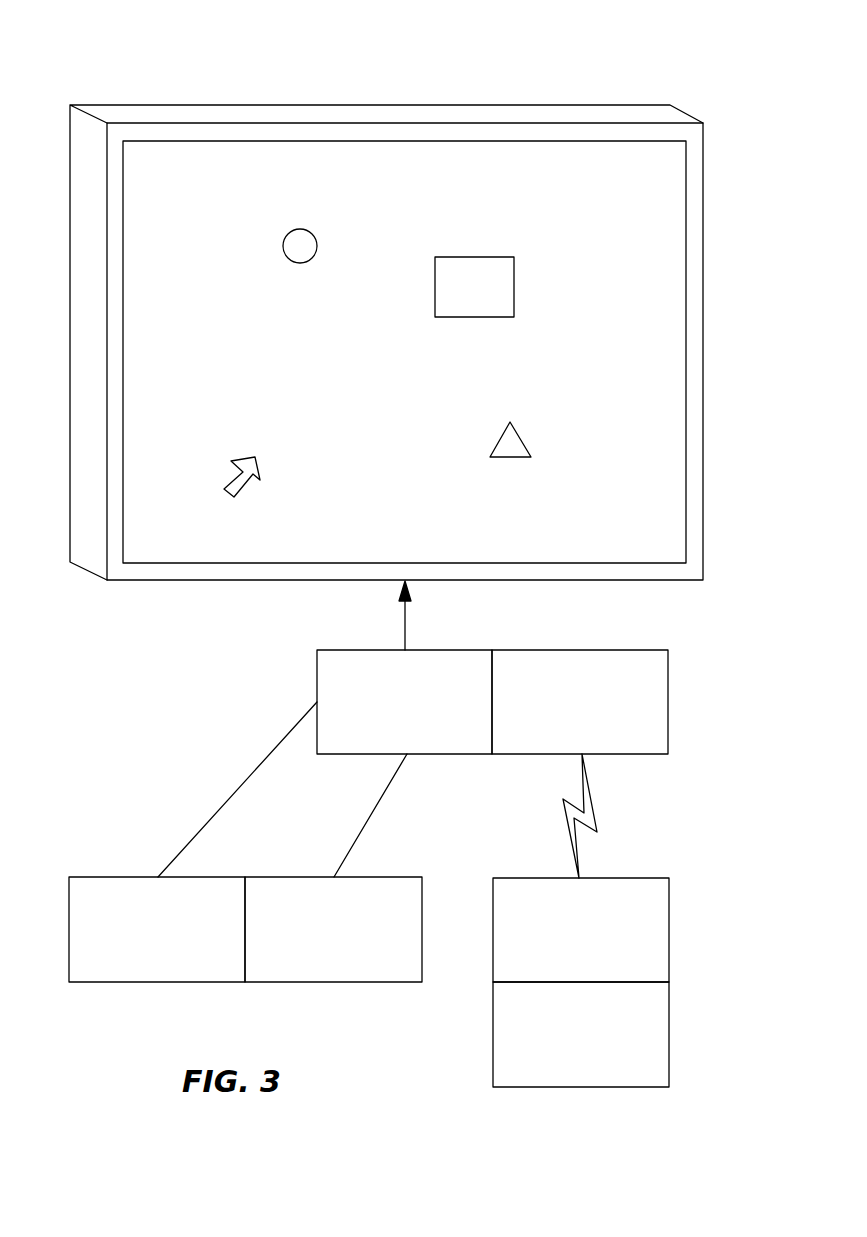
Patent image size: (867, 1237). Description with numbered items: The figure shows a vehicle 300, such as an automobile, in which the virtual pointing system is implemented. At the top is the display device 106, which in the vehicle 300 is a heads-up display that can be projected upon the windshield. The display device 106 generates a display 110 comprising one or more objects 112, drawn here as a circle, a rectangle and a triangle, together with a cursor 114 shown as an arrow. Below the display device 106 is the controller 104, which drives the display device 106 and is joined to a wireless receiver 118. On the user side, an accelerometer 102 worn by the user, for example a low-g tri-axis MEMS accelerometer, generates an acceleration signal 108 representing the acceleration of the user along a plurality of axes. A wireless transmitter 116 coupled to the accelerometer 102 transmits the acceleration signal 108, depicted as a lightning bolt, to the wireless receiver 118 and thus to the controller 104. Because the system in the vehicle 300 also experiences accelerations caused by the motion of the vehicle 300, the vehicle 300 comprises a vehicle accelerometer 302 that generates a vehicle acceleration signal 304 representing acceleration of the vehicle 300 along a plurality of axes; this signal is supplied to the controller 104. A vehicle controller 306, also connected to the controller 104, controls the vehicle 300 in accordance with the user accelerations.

The vehicle 300 is at (453, 47).
The display device 106 is at (705, 247).
The display 110 is at (660, 317).
The objects 112 is at (596, 243).
The cursor 114 is at (260, 468).
The controller 104 is at (404, 667).
The wireless receiver 118 is at (580, 702).
The vehicle acceleration signal 304 is at (357, 832).
The vehicle controller 306 is at (157, 929).
The vehicle accelerometer 302 is at (333, 929).
The acceleration signal 108 is at (597, 832).
The wireless transmitter 116 is at (581, 930).
The accelerometer 102 is at (581, 1034).